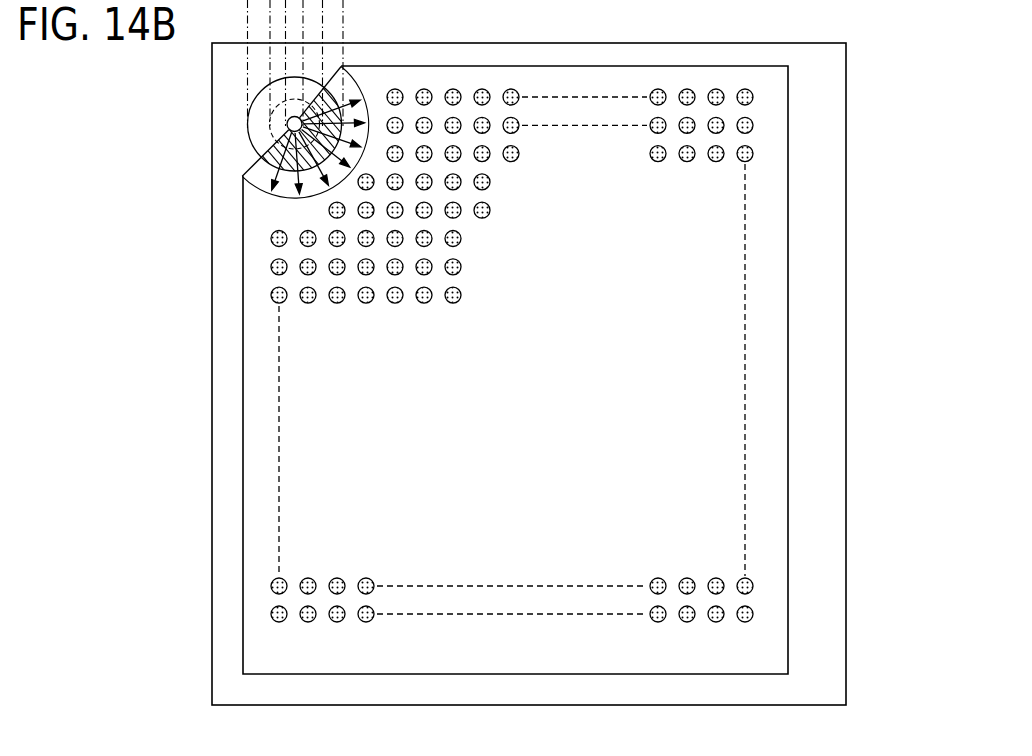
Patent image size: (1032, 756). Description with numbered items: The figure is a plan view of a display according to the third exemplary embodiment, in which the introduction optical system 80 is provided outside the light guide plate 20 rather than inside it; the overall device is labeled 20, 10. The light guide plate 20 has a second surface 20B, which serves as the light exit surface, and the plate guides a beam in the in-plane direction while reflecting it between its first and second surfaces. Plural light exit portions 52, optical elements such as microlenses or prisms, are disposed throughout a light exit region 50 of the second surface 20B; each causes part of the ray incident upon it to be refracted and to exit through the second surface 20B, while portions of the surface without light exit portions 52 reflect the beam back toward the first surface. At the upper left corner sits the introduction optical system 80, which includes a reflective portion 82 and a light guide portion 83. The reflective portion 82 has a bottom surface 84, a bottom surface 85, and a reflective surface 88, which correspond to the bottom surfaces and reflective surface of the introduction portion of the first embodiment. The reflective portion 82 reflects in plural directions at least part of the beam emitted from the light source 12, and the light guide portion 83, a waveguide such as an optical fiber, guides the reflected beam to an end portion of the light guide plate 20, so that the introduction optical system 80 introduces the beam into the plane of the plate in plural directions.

The lighting device 10 is at (831, 109).
The light guide plate 20 is at (491, 352).
The second surface 20B is at (835, 90).
The light exit region 50 is at (595, 272).
The light exit portions 52 is at (745, 89).
The light source 12 is at (275, 98).
The introduction optical system 80 is at (256, 110).
The reflective portion 82 is at (162, 87).
The light guide portion 83 is at (348, 82).
The bottom surface 84 is at (250, 112).
The bottom surface 85 is at (287, 122).
The reflective surface 88 is at (261, 147).